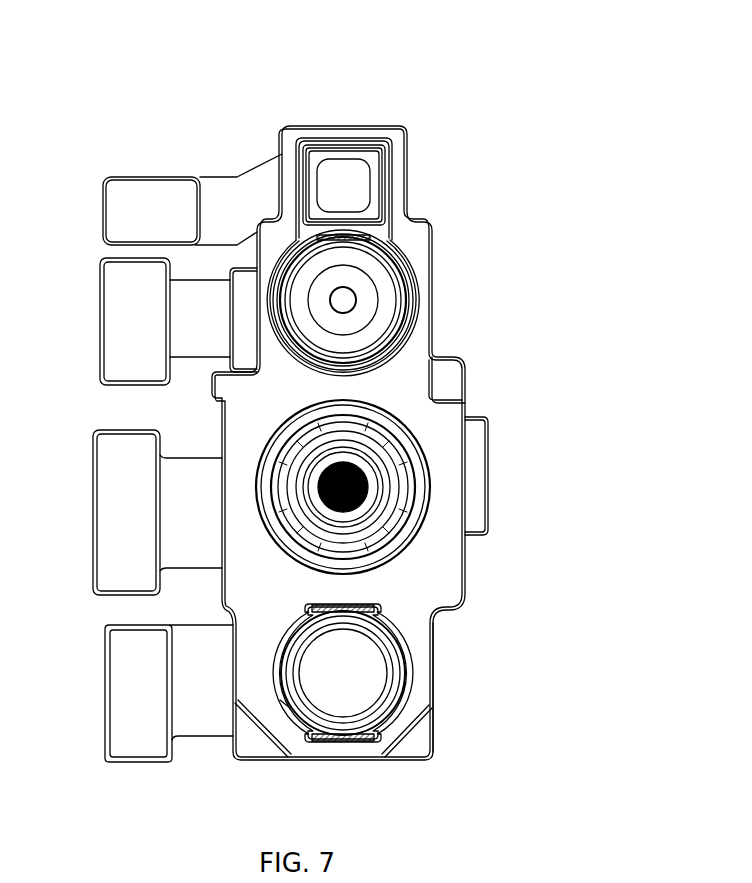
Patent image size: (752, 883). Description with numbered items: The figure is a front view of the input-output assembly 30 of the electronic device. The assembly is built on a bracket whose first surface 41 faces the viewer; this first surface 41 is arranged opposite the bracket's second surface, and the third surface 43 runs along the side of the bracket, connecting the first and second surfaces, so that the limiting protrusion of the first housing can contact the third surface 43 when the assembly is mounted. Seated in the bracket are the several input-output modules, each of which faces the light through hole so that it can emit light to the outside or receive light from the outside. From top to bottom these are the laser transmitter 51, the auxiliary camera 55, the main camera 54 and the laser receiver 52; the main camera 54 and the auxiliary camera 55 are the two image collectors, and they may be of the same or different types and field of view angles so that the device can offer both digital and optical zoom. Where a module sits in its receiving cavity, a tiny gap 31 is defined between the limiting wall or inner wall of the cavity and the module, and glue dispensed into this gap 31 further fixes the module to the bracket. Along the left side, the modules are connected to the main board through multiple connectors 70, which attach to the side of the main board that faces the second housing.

The input-output assembly 30 is at (66, 52).
The gap 31 is at (292, 718).
The first surface 41 is at (398, 585).
The third surface 43 is at (443, 637).
The laser transmitter 51 is at (340, 185).
The laser receiver 52 is at (352, 673).
The main camera 54 is at (365, 485).
The auxiliary camera 55 is at (347, 299).
The connector 70 is at (133, 717).